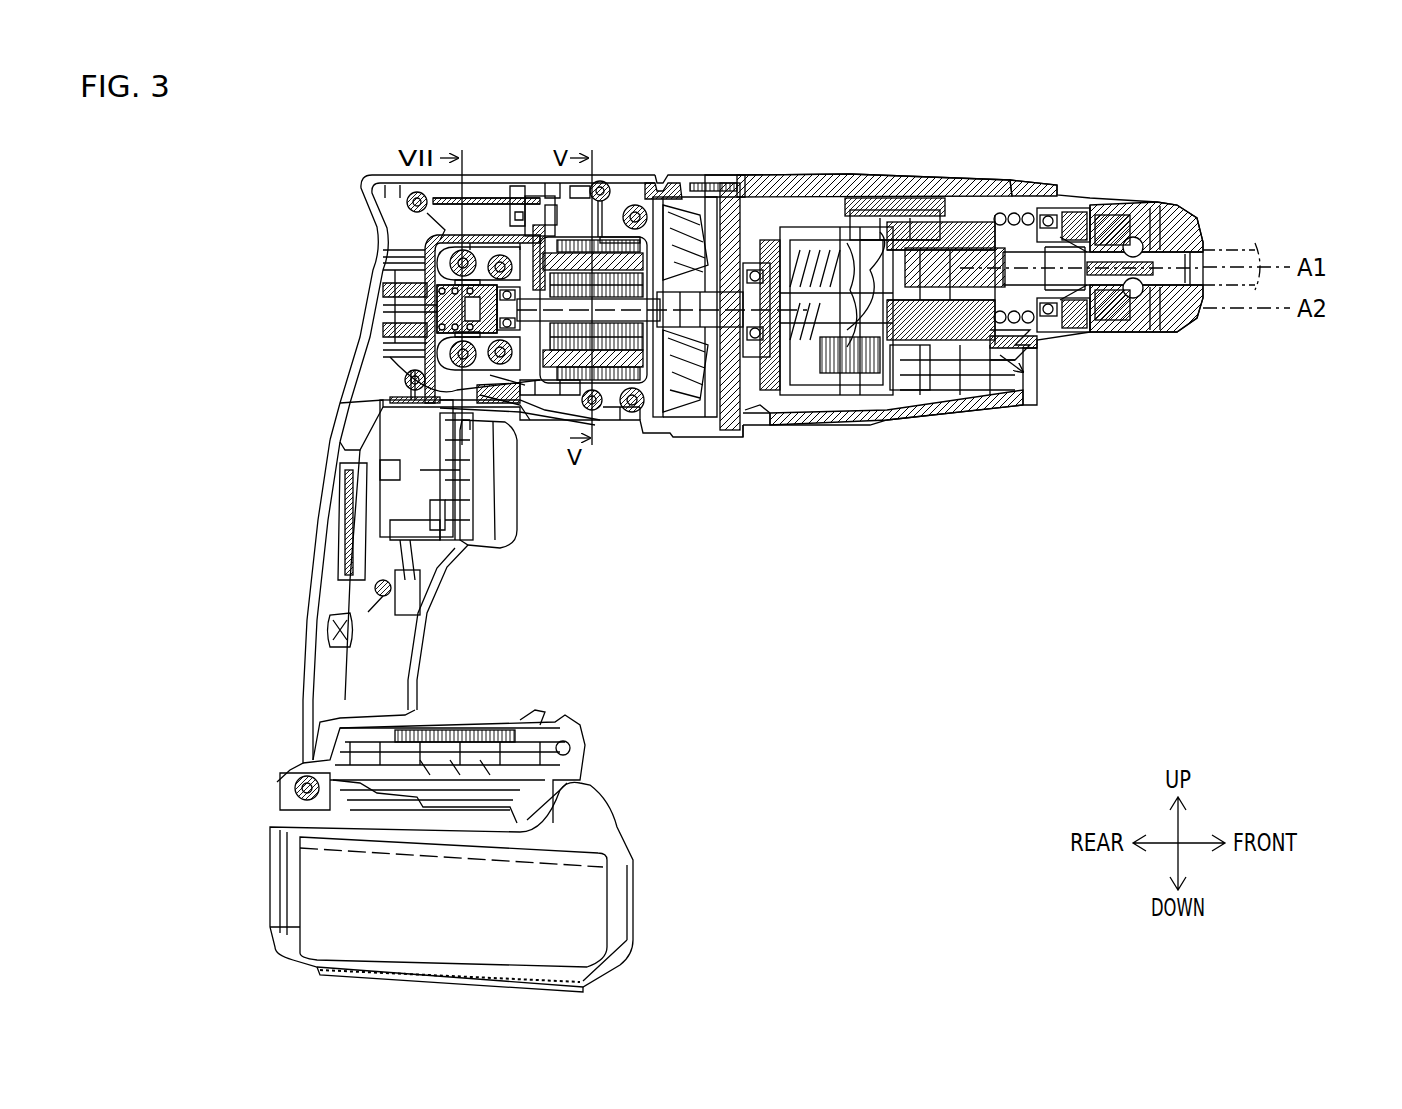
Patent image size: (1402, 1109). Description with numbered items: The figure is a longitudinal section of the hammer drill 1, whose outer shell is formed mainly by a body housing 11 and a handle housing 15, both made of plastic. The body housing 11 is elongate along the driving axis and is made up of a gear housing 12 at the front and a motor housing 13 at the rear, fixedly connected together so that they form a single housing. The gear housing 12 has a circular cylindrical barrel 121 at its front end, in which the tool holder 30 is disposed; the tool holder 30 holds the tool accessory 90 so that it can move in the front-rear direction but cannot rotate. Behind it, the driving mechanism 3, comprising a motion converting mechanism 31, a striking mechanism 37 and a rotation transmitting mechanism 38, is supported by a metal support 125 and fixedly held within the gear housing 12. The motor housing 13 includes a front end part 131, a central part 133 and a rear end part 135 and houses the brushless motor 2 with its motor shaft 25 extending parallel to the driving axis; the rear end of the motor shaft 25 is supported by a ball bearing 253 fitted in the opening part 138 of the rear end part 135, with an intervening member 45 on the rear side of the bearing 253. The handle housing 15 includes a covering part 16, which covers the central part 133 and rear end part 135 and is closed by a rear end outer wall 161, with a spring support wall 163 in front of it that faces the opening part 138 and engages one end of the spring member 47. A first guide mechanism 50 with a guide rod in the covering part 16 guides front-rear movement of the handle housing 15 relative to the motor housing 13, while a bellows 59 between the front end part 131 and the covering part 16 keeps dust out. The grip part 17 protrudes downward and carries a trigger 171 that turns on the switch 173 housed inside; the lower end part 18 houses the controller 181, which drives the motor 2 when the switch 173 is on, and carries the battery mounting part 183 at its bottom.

The hammer drill 1 is at (360, 135).
The motor 2 is at (605, 280).
The driving mechanism 3 is at (927, 400).
The body housing 11 is at (967, 160).
The gear housing 12 is at (853, 427).
The motor housing 13 is at (610, 410).
The handle housing 15 is at (283, 452).
The covering part 16 is at (493, 168).
The grip part 17 is at (317, 522).
The lower end part 18 is at (570, 720).
The motor shaft 25 is at (655, 400).
The tool holder 30 is at (1130, 203).
The motion converting mechanism 31 is at (830, 252).
The striking mechanism 37 is at (1083, 292).
The rotation transmitting mechanism 38 is at (1040, 342).
The intervening member 45 is at (400, 357).
The spring member 47 is at (425, 330).
The first guide mechanism 50 is at (415, 232).
The bellows 59 is at (667, 180).
The tool accessory 90 is at (1217, 257).
The barrel 121 is at (1093, 200).
The metal support 125 is at (860, 203).
The front end part 131 is at (702, 180).
The central part 133 is at (603, 180).
The rear end part 135 is at (507, 258).
The opening part 138 is at (423, 290).
The rear end outer wall 161 is at (385, 252).
The spring support wall 163 is at (400, 317).
The trigger 171 is at (507, 527).
The switch 173 is at (420, 503).
The controller 181 is at (445, 748).
The battery mounting part 183 is at (300, 780).
The bearing 253 is at (510, 383).